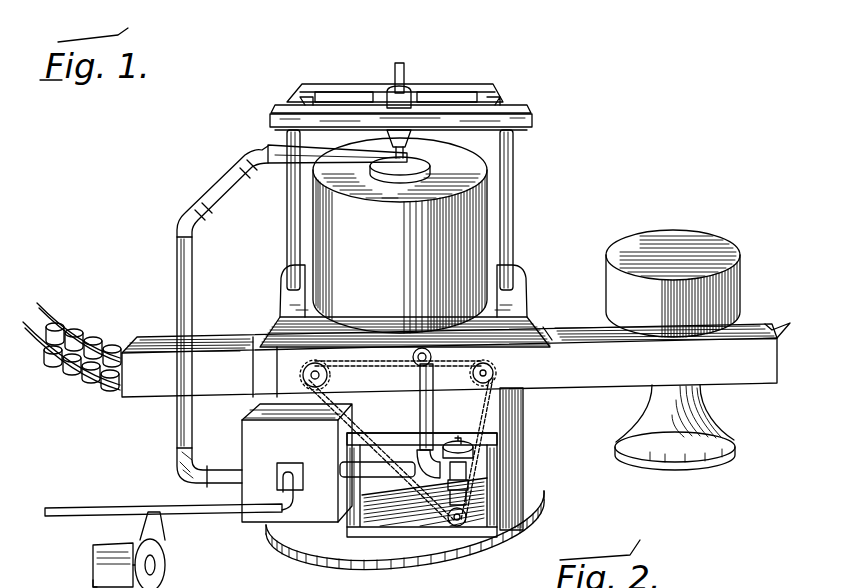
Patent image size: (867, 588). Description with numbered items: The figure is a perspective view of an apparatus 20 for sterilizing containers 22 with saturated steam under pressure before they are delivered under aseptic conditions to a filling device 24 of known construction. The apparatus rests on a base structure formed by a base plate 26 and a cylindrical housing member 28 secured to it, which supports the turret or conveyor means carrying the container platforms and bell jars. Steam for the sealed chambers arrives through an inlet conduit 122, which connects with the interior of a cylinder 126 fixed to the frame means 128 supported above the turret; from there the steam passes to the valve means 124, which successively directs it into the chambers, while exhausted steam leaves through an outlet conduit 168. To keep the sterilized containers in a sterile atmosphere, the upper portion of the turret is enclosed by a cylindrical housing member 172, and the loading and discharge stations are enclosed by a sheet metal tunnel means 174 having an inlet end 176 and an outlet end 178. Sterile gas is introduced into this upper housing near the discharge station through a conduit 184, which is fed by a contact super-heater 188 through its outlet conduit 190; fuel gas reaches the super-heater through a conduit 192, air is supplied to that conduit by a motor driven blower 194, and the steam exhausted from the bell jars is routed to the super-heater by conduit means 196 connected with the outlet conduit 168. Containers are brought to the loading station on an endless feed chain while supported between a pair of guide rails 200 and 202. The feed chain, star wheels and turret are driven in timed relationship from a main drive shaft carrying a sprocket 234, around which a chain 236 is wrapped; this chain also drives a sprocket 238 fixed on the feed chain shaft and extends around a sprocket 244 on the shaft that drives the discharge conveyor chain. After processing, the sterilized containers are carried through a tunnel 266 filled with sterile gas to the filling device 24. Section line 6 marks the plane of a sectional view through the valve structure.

The section line 6 is at (440, 73).
The apparatus 20 is at (530, 172).
The containers 22 is at (100, 342).
The filling device 24 is at (702, 234).
The base plate 26 is at (540, 520).
The cylindrical housing member 28 is at (507, 418).
The inlet conduit 122 is at (397, 68).
The valve means 124 is at (447, 163).
The cylinder 126 is at (453, 140).
The frame means 128 is at (510, 84).
The outlet conduit 168 is at (473, 187).
The cylindrical housing member 172 is at (477, 217).
The sheet metal tunnel means 174 is at (277, 366).
The inlet end 176 is at (248, 375).
The outlet end 178 is at (544, 327).
The conduit 184 is at (420, 413).
The contact super-heater 188 is at (310, 514).
The outlet conduit 190 is at (418, 485).
The conduit 192 is at (110, 514).
The motor driven blower 194 is at (166, 573).
The conduit means 196 is at (188, 277).
The guide rail 200 is at (28, 333).
The guide rail 202 is at (37, 308).
The sprocket 234 is at (433, 500).
The chain 236 is at (424, 485).
The sprocket 238 is at (327, 358).
The sprocket 244 is at (492, 360).
The tunnel 266 is at (606, 372).